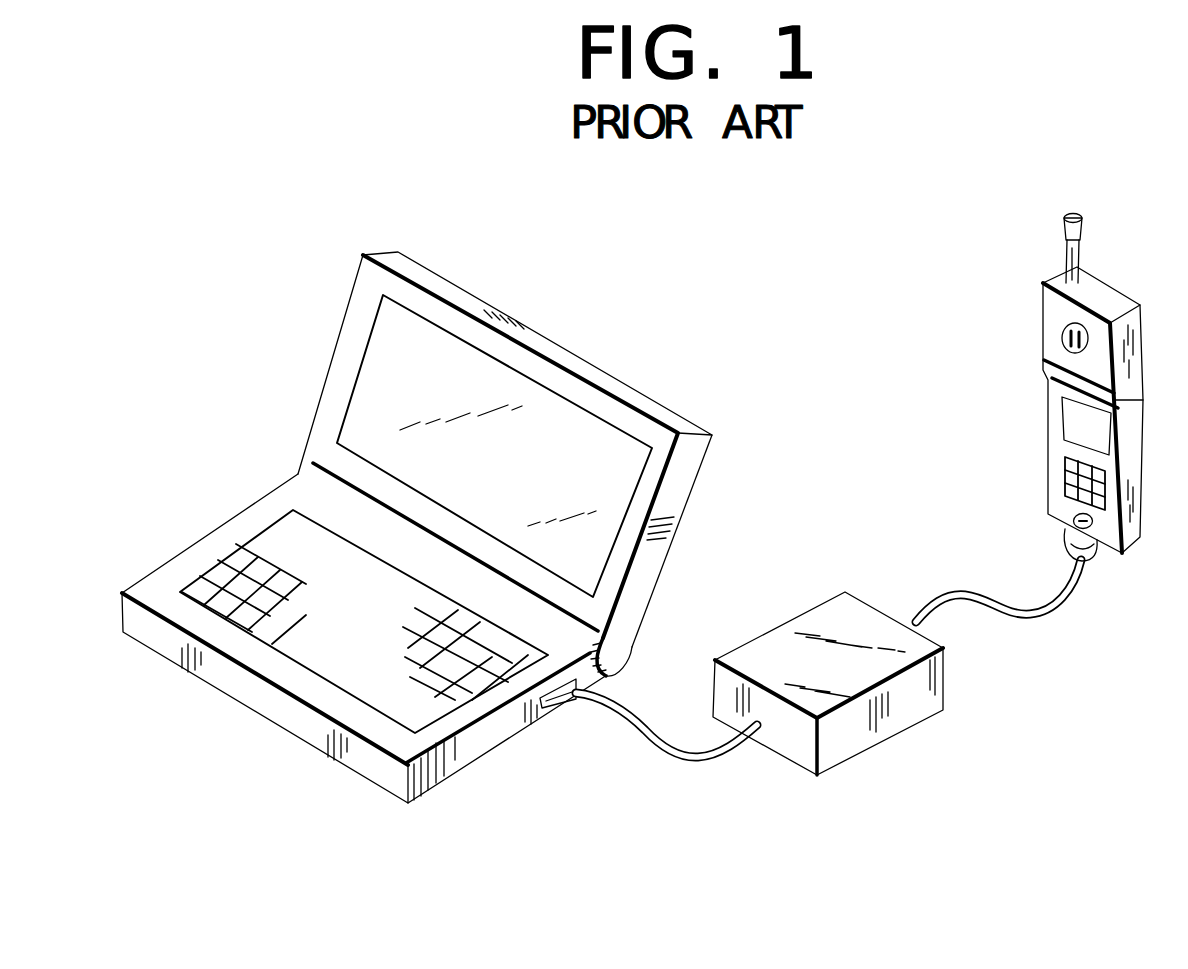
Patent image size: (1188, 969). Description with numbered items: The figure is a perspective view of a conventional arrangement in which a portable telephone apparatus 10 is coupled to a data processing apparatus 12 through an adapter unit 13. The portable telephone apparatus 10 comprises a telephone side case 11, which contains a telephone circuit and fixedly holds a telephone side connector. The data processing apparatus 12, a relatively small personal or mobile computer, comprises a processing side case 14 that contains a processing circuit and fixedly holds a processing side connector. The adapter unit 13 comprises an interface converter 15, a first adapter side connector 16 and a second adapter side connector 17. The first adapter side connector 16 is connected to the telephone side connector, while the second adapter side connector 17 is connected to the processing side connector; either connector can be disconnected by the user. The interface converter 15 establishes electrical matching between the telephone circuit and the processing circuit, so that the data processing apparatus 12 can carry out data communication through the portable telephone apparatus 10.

The conventional portable telephone apparatus 10 is at (1038, 328).
The telephone side case 11 is at (1055, 497).
The data processing apparatus 12 is at (292, 459).
The adapter unit 13 is at (828, 725).
The processing side case 14 is at (220, 667).
The interface converter 15 is at (845, 732).
The first adapter side connector 16 is at (1086, 562).
The second adapter side connector 17 is at (546, 712).